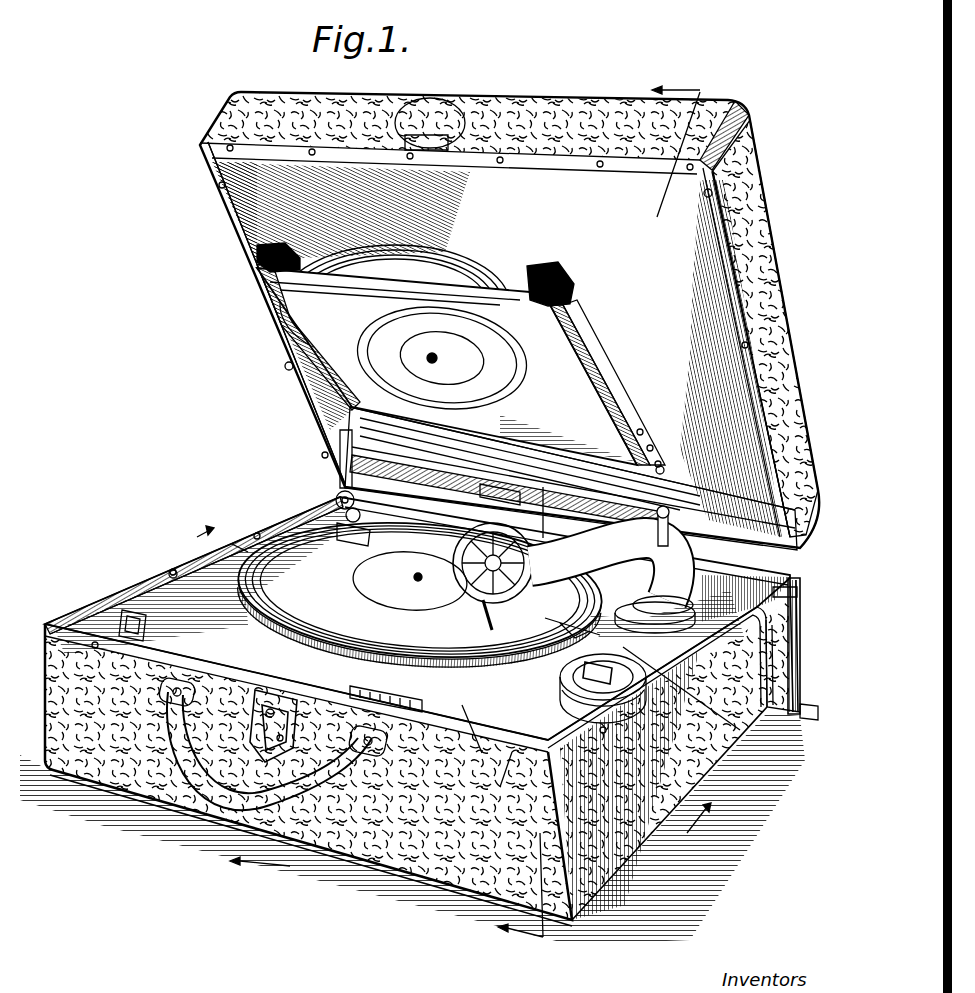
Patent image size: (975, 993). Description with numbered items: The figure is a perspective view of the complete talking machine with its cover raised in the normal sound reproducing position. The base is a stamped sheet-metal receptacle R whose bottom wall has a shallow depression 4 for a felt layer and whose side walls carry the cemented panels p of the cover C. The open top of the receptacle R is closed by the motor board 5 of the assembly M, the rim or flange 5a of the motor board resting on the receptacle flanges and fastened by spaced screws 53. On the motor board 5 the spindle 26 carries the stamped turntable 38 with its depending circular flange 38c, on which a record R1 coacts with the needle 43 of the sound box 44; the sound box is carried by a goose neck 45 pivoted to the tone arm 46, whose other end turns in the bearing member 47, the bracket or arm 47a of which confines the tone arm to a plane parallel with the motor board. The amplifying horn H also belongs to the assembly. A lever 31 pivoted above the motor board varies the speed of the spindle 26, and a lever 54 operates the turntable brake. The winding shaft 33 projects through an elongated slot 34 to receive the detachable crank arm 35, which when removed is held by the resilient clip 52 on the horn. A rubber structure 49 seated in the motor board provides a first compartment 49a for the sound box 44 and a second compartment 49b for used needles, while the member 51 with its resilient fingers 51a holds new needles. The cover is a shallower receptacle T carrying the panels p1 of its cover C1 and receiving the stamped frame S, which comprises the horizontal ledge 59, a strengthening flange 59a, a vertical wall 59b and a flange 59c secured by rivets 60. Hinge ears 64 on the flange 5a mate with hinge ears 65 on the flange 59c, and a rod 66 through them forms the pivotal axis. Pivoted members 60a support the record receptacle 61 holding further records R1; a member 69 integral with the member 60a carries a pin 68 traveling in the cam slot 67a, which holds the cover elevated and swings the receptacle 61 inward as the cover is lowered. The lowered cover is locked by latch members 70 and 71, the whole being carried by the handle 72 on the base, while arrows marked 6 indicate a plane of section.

The receptacle T is at (262, 91).
The latch member 71 is at (418, 143).
The cover C1 is at (545, 110).
The panels p1 is at (600, 115).
The shallow depression 4 is at (599, 518).
The rivets 60 is at (713, 190).
The flange 59c is at (215, 197).
The frame member S is at (235, 217).
The records R1 is at (457, 268).
The receptacle 61 is at (598, 342).
The vertical wall 59b is at (300, 390).
The ledge 59 is at (392, 453).
The strengthening flange 59a is at (503, 440).
The pivoted members 60a is at (662, 465).
The hinge ears 65 is at (462, 480).
The hinge ears 64 is at (506, 491).
The clip 52 is at (488, 494).
The motor board 5 is at (391, 674).
The cover C is at (420, 873).
The panels p is at (633, 833).
The assembly M is at (700, 737).
The receptacle R is at (110, 800).
The latch member 70 is at (233, 780).
The handle 72 is at (267, 793).
The resilient fingers 51a is at (123, 607).
The needle receptacle member 51 is at (170, 571).
The rim or flange 5a is at (100, 610).
The screws 53 is at (175, 569).
The brake lever 54 is at (240, 550).
The section line 6- 6 is at (447, 692).
The turntable 38 is at (252, 632).
The circular flange 38c is at (307, 663).
The shaft or spindle 26 is at (414, 577).
The goose neck 45 is at (452, 541).
The sound box 44 is at (455, 575).
The stylus or needle 43 is at (485, 620).
The tone arm 46 is at (605, 535).
The bracket or arm 47a is at (672, 544).
The elongated slot 34 is at (575, 637).
The cam slot 67a is at (350, 538).
The pin 68 is at (354, 523).
The member 69 is at (348, 447).
The amplifying horn H is at (343, 505).
The first compartment 49a is at (562, 657).
The second compartment 49b is at (572, 676).
The sound box support structure 49 is at (560, 697).
The lever 31 is at (424, 687).
The winding shaft 33 is at (683, 688).
The rod 66 is at (778, 567).
The bearing member 47 is at (790, 590).
The crank arm 35 is at (790, 625).